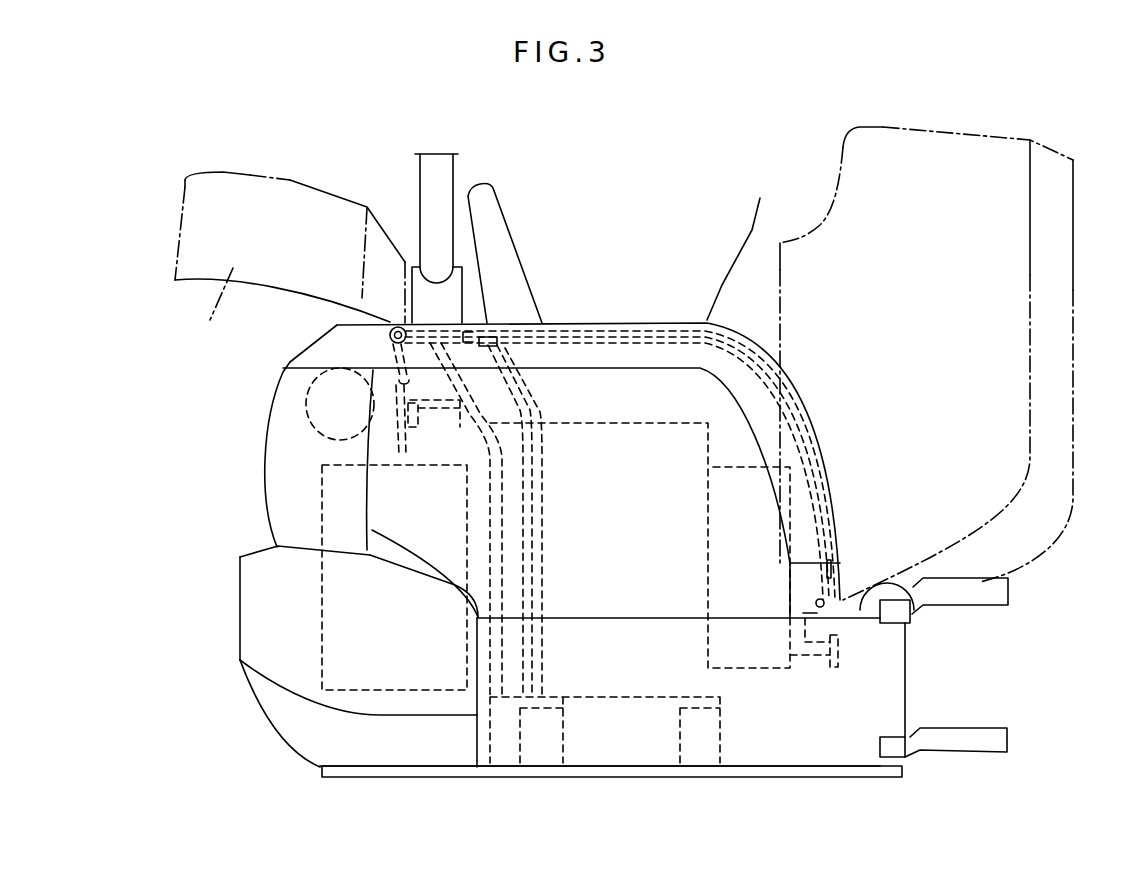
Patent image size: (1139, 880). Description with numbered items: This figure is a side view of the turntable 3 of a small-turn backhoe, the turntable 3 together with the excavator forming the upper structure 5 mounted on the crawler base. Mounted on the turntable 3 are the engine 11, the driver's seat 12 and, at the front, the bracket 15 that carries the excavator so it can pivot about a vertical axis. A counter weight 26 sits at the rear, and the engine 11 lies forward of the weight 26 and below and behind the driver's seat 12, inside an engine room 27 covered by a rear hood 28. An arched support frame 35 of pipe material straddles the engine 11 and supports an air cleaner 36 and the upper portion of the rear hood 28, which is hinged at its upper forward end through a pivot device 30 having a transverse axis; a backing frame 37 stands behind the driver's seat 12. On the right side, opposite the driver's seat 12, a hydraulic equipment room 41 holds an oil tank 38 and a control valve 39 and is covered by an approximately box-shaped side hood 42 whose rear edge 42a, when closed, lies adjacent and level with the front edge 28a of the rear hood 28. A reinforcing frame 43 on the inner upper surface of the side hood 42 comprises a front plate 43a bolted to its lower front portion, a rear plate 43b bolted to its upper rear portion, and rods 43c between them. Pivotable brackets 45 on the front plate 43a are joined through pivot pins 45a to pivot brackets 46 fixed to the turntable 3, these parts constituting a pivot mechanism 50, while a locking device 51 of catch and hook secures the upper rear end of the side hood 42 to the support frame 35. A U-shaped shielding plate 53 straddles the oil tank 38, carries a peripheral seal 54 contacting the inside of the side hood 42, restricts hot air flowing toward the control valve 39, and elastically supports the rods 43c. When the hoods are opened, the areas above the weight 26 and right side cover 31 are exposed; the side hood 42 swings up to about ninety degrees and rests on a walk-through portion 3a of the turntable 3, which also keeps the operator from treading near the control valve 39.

The turntable 3 is at (519, 661).
The upper structure 5 is at (228, 617).
The walk-through portion 3a is at (913, 613).
The engine 11 is at (320, 672).
The driver's seat 12 is at (503, 230).
The bracket 15 is at (967, 737).
The weight 26 is at (260, 647).
The engine room 27 is at (283, 410).
The rear hood 28 is at (283, 372).
The front edge 28a is at (380, 533).
The pivot device 30 is at (390, 337).
The right side cover 31 is at (582, 752).
The support frame 35 is at (478, 423).
The air cleaner 36 is at (318, 430).
The backing frame 37 is at (443, 173).
The oil tank 38 is at (623, 688).
The control valve 39 is at (753, 663).
The hydraulic equipment room 41 is at (658, 377).
The side hood 42 is at (795, 238).
The rear edge 42a is at (360, 451).
The reinforcing frame 43 is at (920, 383).
The front plate 43a is at (837, 572).
The rear plate 43b is at (440, 332).
The rods 43c is at (817, 467).
The pivotable brackets 45 is at (960, 579).
The pivot pins 45a is at (790, 600).
The pivot brackets 46 is at (840, 657).
The pivot mechanism 50 is at (815, 668).
The locking device 51 is at (385, 447).
The shielding plate 53 is at (542, 495).
The seal 54 is at (497, 343).